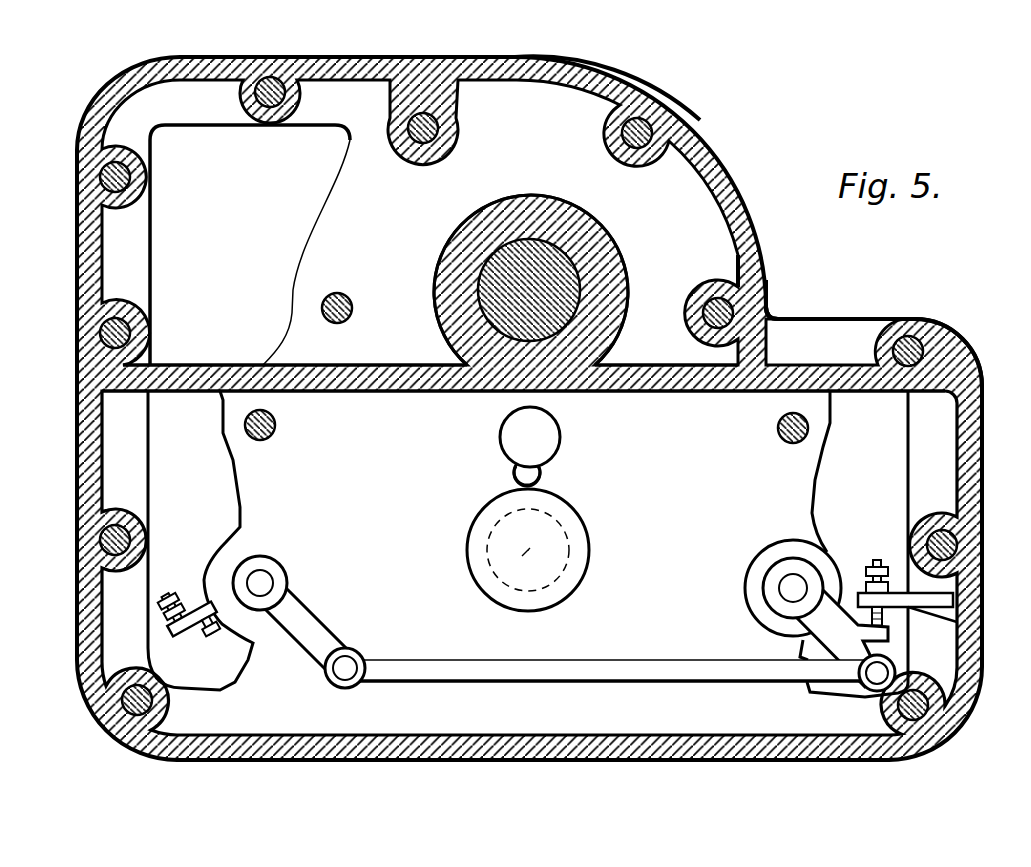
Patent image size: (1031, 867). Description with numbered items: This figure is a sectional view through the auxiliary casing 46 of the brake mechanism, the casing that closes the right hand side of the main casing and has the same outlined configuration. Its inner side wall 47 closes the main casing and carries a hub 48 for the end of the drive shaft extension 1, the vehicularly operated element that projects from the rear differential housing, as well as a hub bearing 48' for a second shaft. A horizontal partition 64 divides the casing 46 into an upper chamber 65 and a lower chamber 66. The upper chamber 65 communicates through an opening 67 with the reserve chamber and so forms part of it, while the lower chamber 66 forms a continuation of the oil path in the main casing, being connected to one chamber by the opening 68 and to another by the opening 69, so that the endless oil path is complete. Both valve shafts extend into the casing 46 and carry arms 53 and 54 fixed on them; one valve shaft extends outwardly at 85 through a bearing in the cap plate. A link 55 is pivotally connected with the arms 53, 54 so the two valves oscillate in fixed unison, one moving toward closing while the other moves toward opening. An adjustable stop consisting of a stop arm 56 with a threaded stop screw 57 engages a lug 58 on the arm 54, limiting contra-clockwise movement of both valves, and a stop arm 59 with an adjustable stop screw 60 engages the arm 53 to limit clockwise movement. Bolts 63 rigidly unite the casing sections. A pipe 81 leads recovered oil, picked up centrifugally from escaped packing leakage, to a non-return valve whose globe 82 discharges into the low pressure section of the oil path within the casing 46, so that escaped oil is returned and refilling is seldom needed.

The extension of the drive shaft 1 is at (566, 263).
The auxiliary casing 46 is at (770, 307).
The inner side wall 47 is at (526, 344).
The hub 48 is at (531, 268).
The hub bearing 48' is at (549, 550).
The arm 53 is at (320, 634).
The arm 54 is at (808, 610).
The link 55 is at (571, 662).
The stop arm 56 is at (940, 596).
The stop screw 57 is at (878, 567).
The lug 58 is at (882, 634).
The stop arm 59 is at (182, 622).
The adjustable stop screw 60 is at (207, 636).
The bolts 63 is at (913, 323).
The horizontal partition 64 is at (390, 380).
The upper chamber 65 is at (512, 118).
The lower chamber 66 is at (590, 720).
The opening 67 is at (294, 272).
The opening 68 is at (221, 499).
The opening 69 is at (818, 494).
The pipe 81 is at (520, 473).
The globe 82 is at (515, 436).
The shaft extension 85 is at (265, 580).